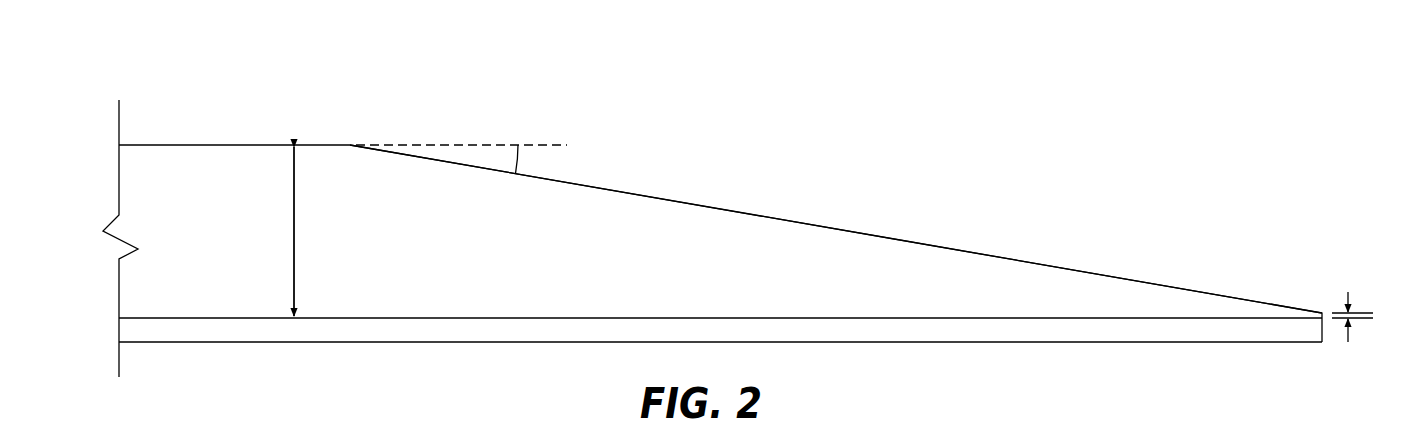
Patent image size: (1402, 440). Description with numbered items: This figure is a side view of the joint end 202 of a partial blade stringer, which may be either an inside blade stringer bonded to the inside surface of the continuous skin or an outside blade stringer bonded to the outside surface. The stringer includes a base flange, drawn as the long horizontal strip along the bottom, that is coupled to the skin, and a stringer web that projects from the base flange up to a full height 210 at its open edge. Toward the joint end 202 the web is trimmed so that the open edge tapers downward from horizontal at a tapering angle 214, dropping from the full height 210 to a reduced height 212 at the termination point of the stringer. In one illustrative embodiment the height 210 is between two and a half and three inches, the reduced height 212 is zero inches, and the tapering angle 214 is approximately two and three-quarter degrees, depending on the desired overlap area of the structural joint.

The joint end 202 is at (961, 180).
The height 210 is at (274, 231).
The reduced height 212 is at (1351, 306).
The tapering angle 214 is at (461, 159).